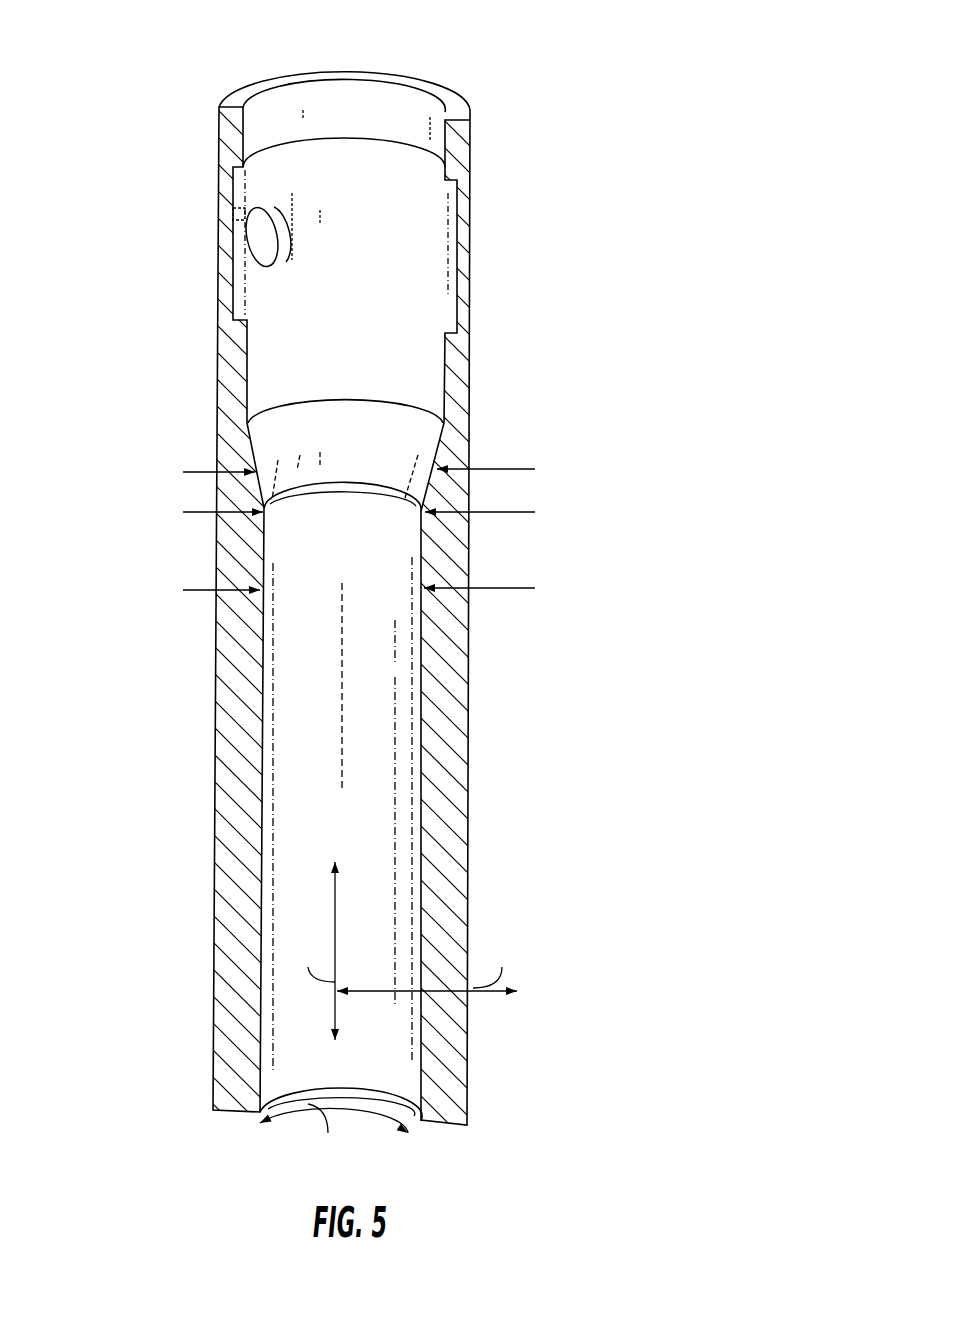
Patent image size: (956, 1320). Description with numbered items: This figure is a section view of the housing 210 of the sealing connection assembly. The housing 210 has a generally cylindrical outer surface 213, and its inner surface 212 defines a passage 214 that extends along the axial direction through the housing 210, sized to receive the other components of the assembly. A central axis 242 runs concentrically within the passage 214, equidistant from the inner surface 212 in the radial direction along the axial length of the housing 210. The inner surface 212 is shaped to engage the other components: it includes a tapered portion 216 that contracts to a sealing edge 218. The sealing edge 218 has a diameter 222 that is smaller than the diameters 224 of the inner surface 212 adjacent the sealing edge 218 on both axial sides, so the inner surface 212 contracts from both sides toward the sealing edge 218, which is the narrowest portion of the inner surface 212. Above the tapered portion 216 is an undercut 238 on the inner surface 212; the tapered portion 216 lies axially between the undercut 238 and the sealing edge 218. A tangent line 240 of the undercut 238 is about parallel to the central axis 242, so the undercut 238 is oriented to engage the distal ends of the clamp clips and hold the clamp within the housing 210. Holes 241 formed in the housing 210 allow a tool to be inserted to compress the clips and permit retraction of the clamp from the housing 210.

The housing 210 is at (600, 82).
The inner surface 212 is at (247, 128).
The outer surface 213 is at (212, 142).
The passage 214 is at (348, 183).
The tapered portion 216 is at (257, 437).
The sealing edge 218 is at (337, 490).
The diameter 222 is at (490, 512).
The diameters 224 is at (490, 469).
The undercut 238 is at (395, 146).
The tangent line 240 is at (240, 215).
The holes 241 is at (271, 265).
The central axis 242 is at (342, 665).